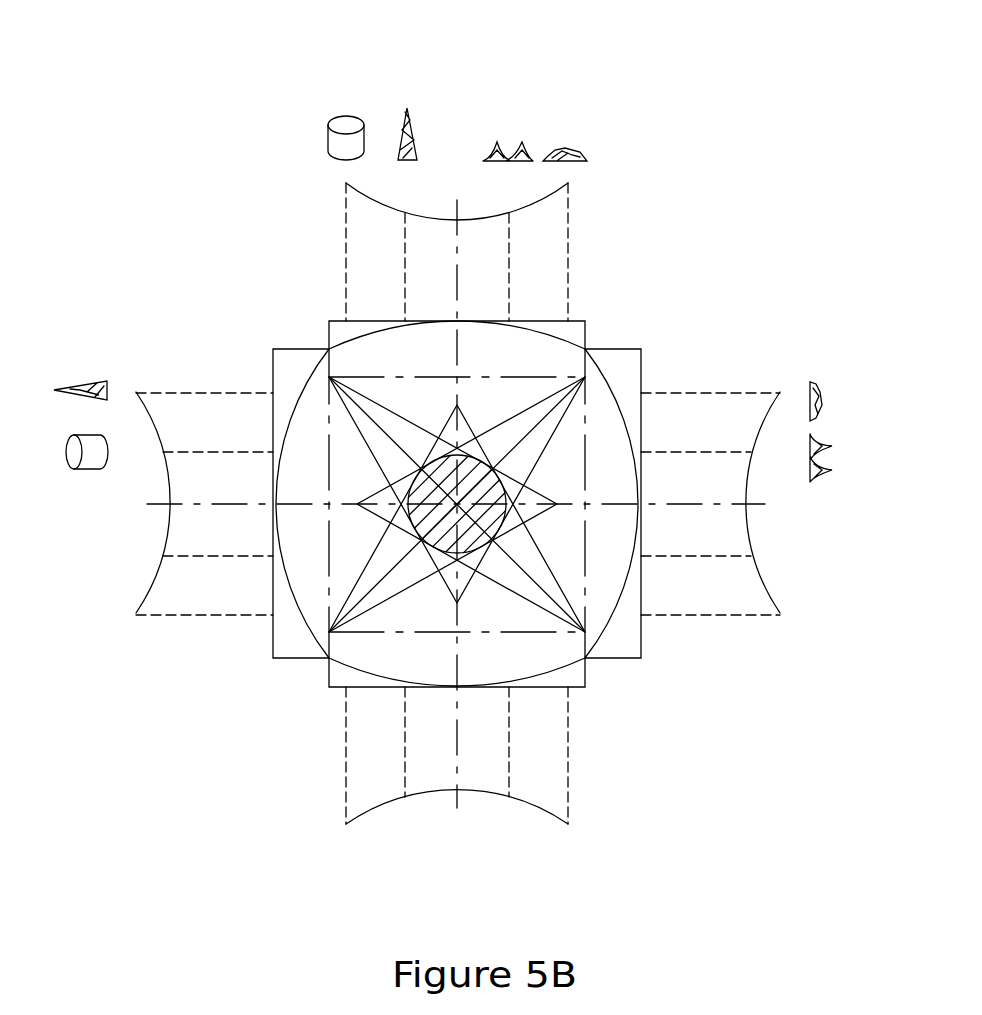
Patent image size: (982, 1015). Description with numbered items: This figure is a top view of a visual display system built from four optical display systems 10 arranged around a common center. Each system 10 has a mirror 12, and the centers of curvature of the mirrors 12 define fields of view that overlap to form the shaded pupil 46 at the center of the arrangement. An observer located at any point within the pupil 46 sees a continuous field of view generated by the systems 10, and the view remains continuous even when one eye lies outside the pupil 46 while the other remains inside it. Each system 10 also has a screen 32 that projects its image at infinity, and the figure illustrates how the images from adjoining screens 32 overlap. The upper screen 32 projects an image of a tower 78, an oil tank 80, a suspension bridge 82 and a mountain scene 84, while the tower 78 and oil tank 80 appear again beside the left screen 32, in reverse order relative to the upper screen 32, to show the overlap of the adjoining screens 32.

The optical display system 10 is at (322, 300).
The mirror 12 is at (310, 367).
The screen 32 is at (557, 199).
The pupil 46 is at (432, 455).
The tower 78 is at (407, 110).
The oil tank 80 is at (328, 143).
The suspension bridge 82 is at (510, 153).
The mountain scene 84 is at (583, 157).